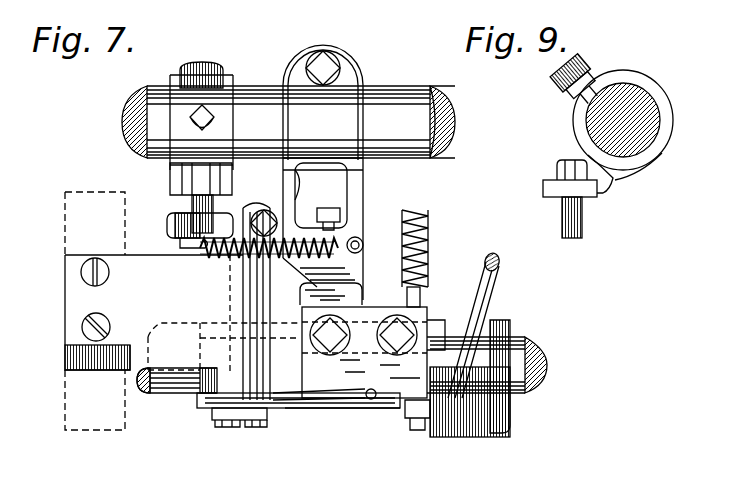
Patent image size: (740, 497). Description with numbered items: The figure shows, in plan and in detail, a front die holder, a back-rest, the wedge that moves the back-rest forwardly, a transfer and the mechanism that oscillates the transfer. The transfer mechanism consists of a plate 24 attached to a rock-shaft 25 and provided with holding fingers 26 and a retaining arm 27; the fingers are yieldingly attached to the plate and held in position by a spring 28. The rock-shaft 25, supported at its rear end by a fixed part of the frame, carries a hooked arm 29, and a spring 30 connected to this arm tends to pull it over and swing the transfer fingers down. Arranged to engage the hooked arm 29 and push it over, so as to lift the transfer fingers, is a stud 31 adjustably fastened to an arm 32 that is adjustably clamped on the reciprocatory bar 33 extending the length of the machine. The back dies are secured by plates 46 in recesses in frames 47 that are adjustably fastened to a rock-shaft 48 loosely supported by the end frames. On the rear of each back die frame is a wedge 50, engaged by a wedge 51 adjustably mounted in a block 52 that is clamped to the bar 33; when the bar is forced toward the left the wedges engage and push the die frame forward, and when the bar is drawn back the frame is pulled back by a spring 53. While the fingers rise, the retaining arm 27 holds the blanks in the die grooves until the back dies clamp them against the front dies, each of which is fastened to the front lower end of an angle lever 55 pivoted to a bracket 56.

In FIG. 7, the plate 24 is at (197, 397).
In FIG. 7, the rock-shaft 25 is at (240, 427).
In FIG. 7, the holding fingers 26 is at (373, 397).
In FIG. 7, the retaining arm 27 is at (407, 410).
In FIG. 7, the spring 28 is at (290, 400).
In FIG. 7, the hooked arm 29 is at (172, 217).
In FIG. 7, the spring 30 is at (278, 260).
In FIG. 7, the stud 31 is at (210, 212).
In FIG. 9, the stud 31 is at (582, 222).
In FIG. 7, the arm 32 is at (187, 184).
In FIG. 9, the arm 32 is at (613, 190).
In FIG. 7, the reciprocatory bar 33 is at (410, 95).
In FIG. 9, the reciprocatory bar 33 is at (662, 122).
In FIG. 7, the plates 46 is at (378, 306).
In FIG. 7, the frames 47 is at (333, 413).
In FIG. 7, the rock-shaft 48 is at (550, 347).
In FIG. 7, the wedge 50 is at (357, 293).
In FIG. 7, the wedge 51 is at (368, 243).
In FIG. 7, the block 52 is at (355, 184).
In FIG. 7, the spring 53 is at (428, 246).
In FIG. 7, the angle lever 55 is at (498, 290).
In FIG. 7, the bracket 56 is at (512, 405).